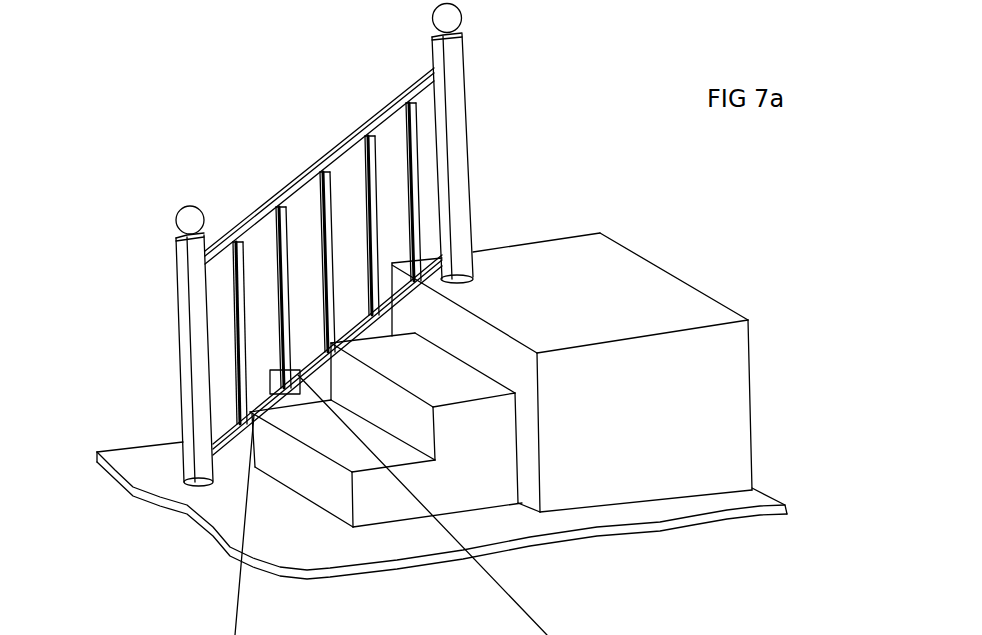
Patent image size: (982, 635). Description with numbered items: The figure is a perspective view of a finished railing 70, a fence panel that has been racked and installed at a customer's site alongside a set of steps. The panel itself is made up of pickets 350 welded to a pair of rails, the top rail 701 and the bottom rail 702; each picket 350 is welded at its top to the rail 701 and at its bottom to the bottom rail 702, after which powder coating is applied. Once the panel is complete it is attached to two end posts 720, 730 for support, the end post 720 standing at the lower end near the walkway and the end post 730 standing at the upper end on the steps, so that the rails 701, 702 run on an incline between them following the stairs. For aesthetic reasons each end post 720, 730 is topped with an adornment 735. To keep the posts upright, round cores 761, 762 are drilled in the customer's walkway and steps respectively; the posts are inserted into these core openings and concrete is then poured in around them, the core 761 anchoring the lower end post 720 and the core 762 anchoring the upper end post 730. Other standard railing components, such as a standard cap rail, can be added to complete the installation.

The finished railing 70 is at (283, 88).
The top rail 701 is at (333, 146).
The bottom rail 702 is at (240, 432).
The picket 350 is at (274, 277).
The end post 720 is at (178, 322).
The end post 730 is at (455, 158).
The adornment 735 is at (462, 22).
The round core 761 is at (185, 483).
The round core 762 is at (476, 254).